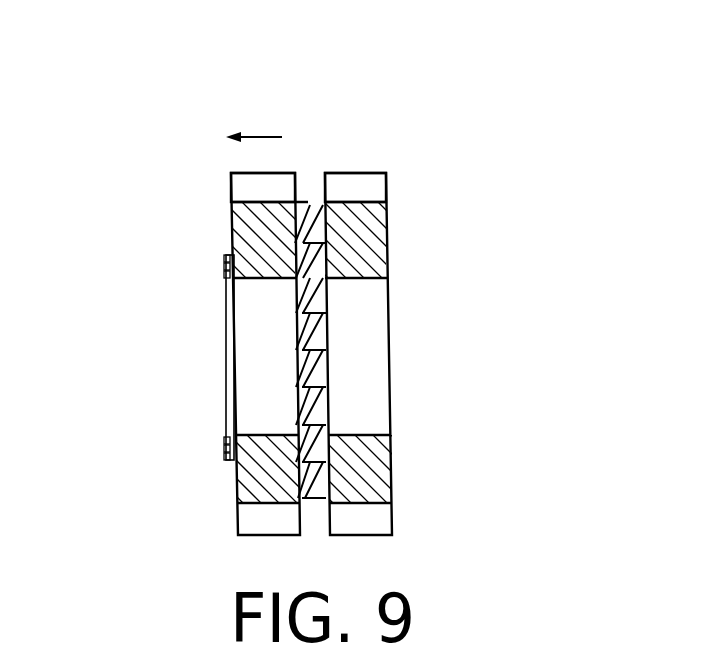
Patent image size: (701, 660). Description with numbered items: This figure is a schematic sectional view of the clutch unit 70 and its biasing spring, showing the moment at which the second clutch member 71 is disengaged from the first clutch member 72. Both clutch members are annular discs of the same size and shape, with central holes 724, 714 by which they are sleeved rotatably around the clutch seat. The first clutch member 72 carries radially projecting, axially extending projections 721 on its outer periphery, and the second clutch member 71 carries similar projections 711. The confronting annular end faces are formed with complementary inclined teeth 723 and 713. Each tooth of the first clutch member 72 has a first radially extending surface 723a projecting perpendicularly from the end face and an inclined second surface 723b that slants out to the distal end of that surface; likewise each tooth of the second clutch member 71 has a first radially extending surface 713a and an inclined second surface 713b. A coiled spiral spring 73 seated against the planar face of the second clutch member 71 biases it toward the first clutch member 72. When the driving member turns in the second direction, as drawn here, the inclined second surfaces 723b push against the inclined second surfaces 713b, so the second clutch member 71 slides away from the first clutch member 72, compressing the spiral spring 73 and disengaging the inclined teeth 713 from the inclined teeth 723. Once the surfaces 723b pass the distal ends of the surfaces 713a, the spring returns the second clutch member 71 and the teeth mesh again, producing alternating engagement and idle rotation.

The clutch unit 70 is at (448, 63).
The second clutch member 71 is at (231, 245).
The first clutch member 72 is at (387, 238).
The spiral spring 73 is at (225, 258).
The projections 711 is at (259, 185).
The projections 721 is at (352, 185).
The inclined teeth 713 is at (90, 260).
The first radially extending surface 713a is at (297, 268).
The inclined second surface 713b is at (297, 300).
The central hole 714 is at (247, 380).
The inclined teeth 723 is at (537, 265).
The first radially extending surface 723a is at (310, 278).
The inclined second surface 723b is at (317, 312).
The central hole 724 is at (378, 392).